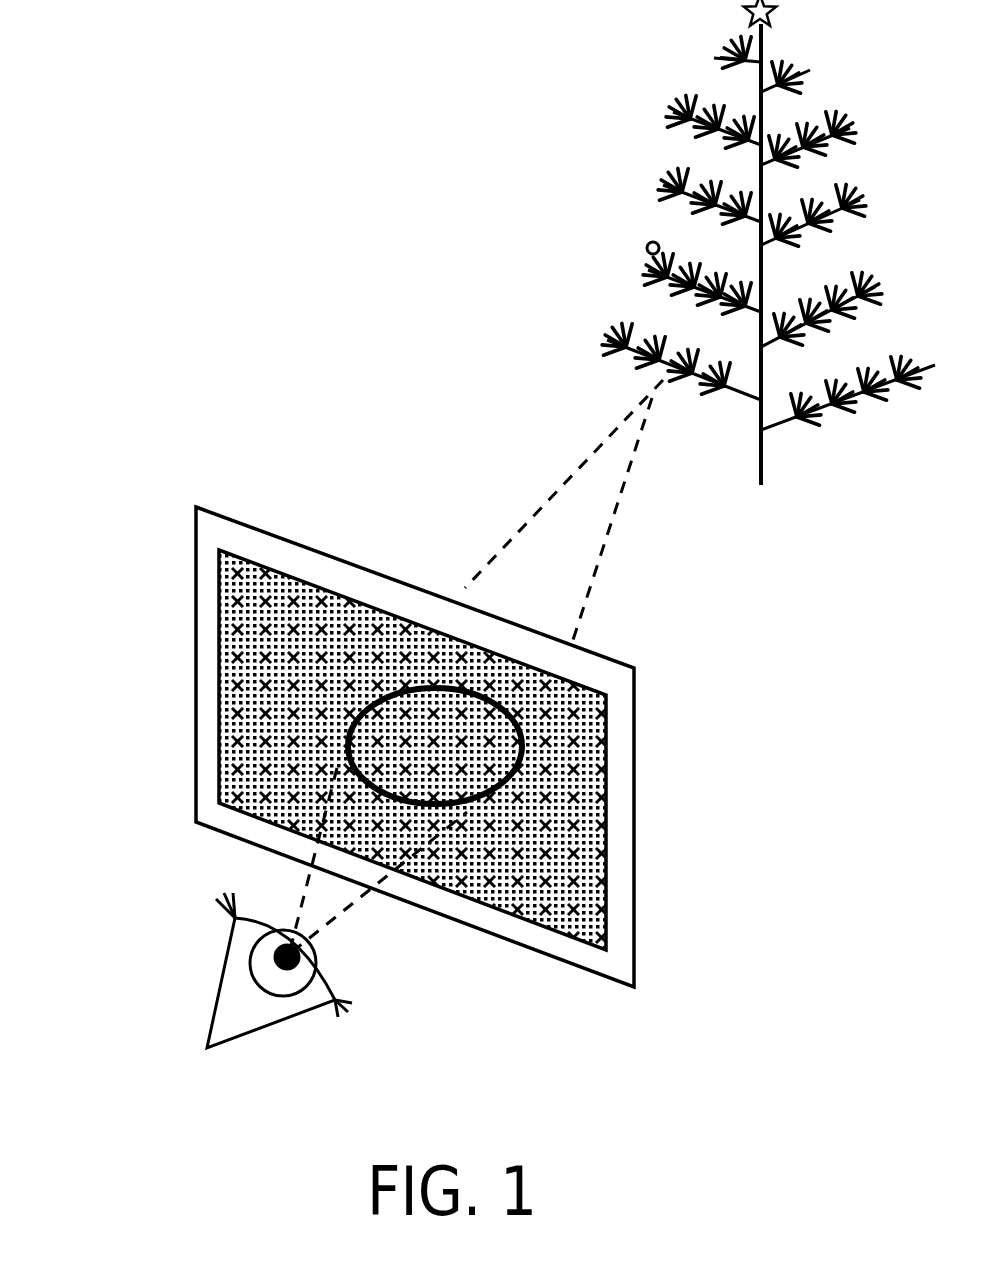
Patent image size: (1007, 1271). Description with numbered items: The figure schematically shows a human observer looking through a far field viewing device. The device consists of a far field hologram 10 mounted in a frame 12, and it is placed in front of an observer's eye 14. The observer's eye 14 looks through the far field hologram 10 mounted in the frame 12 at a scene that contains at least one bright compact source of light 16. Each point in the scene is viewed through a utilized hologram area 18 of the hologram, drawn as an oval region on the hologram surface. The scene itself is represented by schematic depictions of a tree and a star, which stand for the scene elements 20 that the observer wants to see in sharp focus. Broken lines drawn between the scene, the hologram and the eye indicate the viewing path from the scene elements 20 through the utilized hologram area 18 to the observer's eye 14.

The far field hologram 10 is at (222, 572).
The frame 12 is at (207, 650).
The observer's eye 14 is at (230, 977).
The bright compact source of light 16 is at (640, 242).
The utilized hologram area 18 is at (510, 748).
The scene elements 20 is at (743, 13).